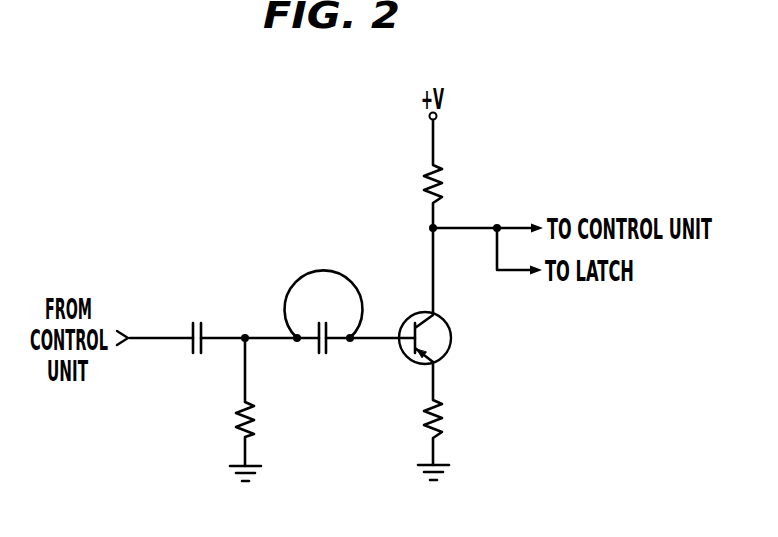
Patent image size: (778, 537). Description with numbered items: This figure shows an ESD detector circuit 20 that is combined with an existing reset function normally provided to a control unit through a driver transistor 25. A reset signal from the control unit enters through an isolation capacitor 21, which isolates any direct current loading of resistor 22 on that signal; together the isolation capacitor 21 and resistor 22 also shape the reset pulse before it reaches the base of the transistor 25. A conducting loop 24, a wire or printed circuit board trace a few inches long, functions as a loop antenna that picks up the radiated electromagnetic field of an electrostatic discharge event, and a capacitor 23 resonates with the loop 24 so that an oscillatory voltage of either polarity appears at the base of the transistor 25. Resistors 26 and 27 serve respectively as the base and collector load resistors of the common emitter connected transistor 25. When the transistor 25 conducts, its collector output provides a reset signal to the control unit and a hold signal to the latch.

The ESD detector circuit 20 is at (272, 249).
The isolation capacitor 21 is at (196, 322).
The resistor 22 is at (236, 421).
The capacitor 23 is at (323, 355).
The conducting loop 24 is at (325, 272).
The driver transistor 25 is at (452, 340).
The base load resistor 26 is at (443, 421).
The collector load resistor 27 is at (445, 178).